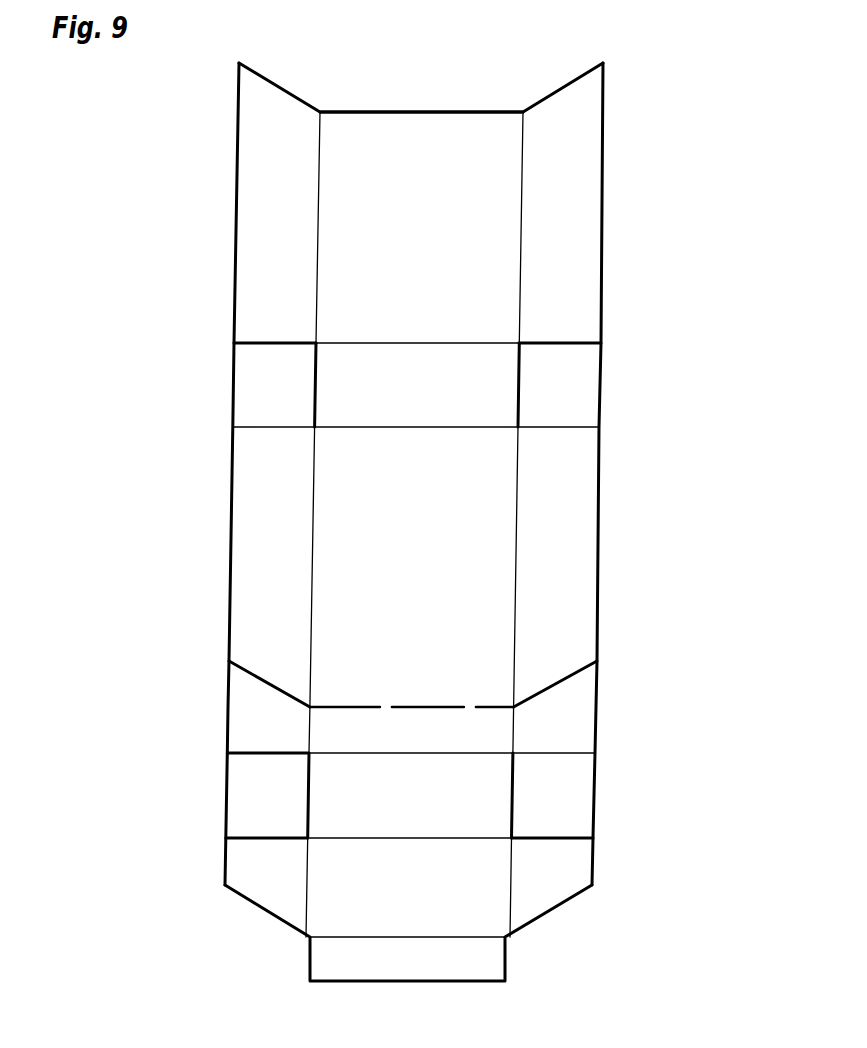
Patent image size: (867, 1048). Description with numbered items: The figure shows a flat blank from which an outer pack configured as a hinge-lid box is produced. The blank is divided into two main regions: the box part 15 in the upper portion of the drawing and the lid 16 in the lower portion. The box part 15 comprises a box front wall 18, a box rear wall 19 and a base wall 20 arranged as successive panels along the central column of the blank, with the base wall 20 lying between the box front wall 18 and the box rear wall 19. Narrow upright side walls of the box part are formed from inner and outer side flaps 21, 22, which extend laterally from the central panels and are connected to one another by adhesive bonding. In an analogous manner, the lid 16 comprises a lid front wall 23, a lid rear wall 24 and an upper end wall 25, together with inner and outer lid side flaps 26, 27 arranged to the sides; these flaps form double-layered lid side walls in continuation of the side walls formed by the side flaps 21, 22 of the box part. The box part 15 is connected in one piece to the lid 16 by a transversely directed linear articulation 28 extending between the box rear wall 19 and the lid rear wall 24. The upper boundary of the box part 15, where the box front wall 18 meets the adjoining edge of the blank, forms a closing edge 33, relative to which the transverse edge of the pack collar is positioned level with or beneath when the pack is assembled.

The box part 15 is at (636, 370).
The lid 16 is at (184, 812).
The box front wall 18 is at (398, 284).
The box rear wall 19 is at (393, 561).
The base wall 20 is at (398, 394).
The side flap 21 is at (268, 515).
The side flap 22 is at (265, 224).
The lid front wall 23 is at (390, 892).
The lid rear wall 24 is at (391, 742).
The upper end wall 25 is at (390, 802).
The lid side flap 26 is at (263, 734).
The lid side flap 27 is at (262, 805).
The linear articulation 28 is at (440, 706).
The closing edge 33 is at (447, 111).